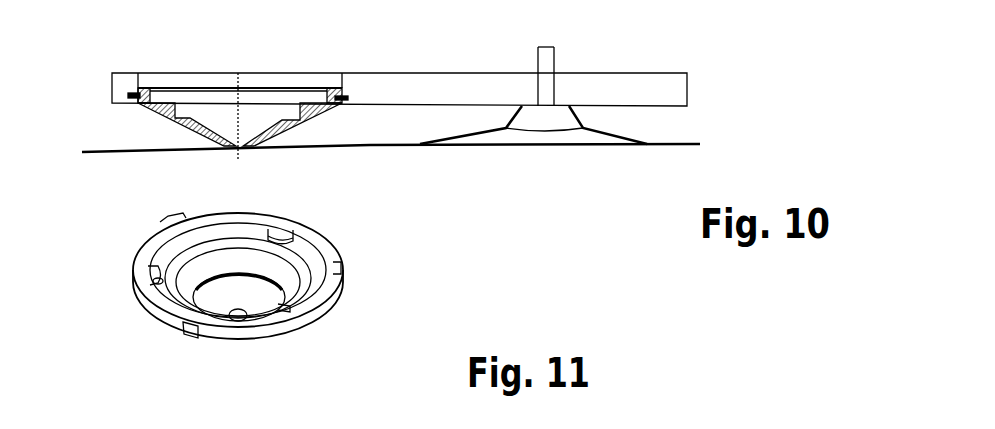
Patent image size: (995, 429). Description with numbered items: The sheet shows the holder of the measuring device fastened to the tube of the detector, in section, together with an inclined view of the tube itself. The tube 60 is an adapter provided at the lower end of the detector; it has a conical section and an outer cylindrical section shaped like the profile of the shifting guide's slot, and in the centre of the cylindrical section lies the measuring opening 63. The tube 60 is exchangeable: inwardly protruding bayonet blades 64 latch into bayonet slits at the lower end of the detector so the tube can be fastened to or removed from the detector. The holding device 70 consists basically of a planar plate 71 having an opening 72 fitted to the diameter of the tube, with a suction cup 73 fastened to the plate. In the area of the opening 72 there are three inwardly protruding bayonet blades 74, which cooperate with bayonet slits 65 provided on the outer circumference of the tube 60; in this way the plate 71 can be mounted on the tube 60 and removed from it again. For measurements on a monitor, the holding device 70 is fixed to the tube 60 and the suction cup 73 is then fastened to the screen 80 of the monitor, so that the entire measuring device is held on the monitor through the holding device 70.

In FIG. 10, the tube 60 is at (296, 127).
In FIG. 11, the tube 60 is at (378, 275).
In FIG. 10, the measuring opening 63 is at (241, 150).
In FIG. 11, the measuring opening 63 is at (239, 311).
In FIG. 11, the bayonet blades 64 is at (285, 232).
In FIG. 11, the bayonet slits 65 is at (163, 220).
In FIG. 10, the holding device 70 is at (745, 92).
In FIG. 10, the planar plate 71 is at (618, 88).
In FIG. 10, the opening 72 is at (187, 82).
In FIG. 10, the suction cup 73 is at (548, 124).
In FIG. 10, the bayonet blades 74 is at (130, 92).
In FIG. 10, the screen 80 is at (140, 143).